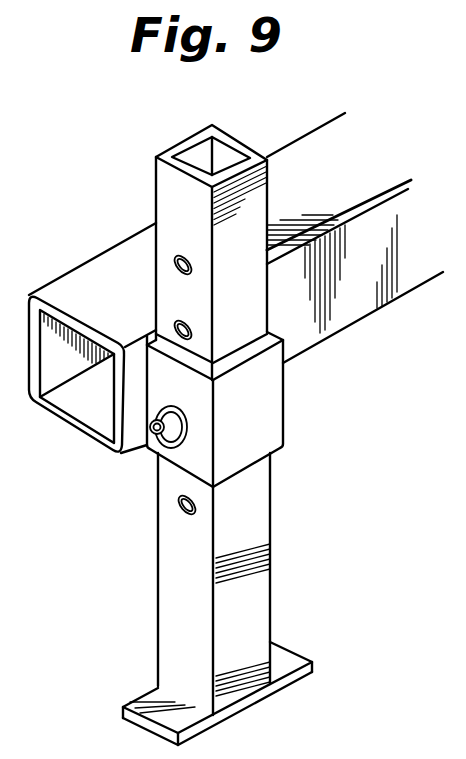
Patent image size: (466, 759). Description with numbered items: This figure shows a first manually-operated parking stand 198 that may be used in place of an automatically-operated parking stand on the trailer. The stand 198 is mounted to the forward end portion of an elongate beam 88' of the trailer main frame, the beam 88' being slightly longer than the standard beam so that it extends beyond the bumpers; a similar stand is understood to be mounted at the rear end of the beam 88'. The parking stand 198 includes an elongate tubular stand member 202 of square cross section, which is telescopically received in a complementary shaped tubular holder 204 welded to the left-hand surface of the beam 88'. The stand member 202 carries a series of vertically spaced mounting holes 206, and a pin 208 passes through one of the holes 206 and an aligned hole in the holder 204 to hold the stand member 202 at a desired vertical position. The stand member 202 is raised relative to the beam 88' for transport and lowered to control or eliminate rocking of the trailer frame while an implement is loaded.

The elongate beam 88' is at (236, 283).
The first manually-operated parking stand 198 is at (235, 435).
The tubular stand member 202 is at (272, 482).
The tubular holder 204 is at (267, 408).
The mounting holes 206 is at (182, 320).
The pin 208 is at (153, 434).